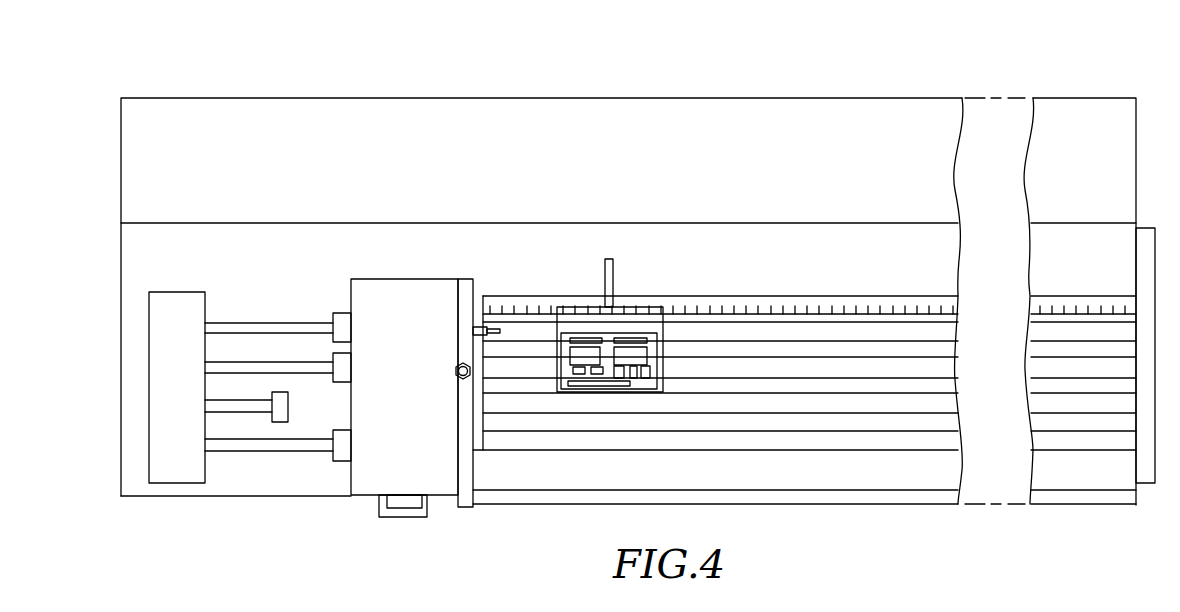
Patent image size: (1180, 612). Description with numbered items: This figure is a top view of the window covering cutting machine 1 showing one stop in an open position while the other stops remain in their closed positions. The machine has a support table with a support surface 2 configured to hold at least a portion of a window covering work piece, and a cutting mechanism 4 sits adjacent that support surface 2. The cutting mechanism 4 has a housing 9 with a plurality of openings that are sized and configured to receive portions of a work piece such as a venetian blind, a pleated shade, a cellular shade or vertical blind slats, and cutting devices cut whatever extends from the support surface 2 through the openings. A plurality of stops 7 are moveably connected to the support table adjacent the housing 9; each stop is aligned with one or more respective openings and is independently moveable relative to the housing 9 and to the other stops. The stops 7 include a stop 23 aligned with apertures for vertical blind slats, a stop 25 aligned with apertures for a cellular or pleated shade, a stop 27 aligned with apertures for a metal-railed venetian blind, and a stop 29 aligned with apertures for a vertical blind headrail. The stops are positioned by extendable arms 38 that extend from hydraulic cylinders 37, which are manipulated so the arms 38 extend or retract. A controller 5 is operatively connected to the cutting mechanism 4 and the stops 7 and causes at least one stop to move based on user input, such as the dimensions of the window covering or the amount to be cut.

The window covering cutting machine 1 is at (476, 77).
The support surface 2 is at (858, 481).
The cutting mechanism 4 is at (364, 501).
The controller 5 is at (585, 307).
The stops 7 is at (240, 367).
The housing 9 is at (425, 290).
The stop 23 is at (343, 331).
The stop 25 is at (343, 368).
The stop 27 is at (290, 407).
The stop 29 is at (343, 446).
The hydraulic cylinders 37 is at (160, 433).
The extendable arms 38 is at (275, 325).